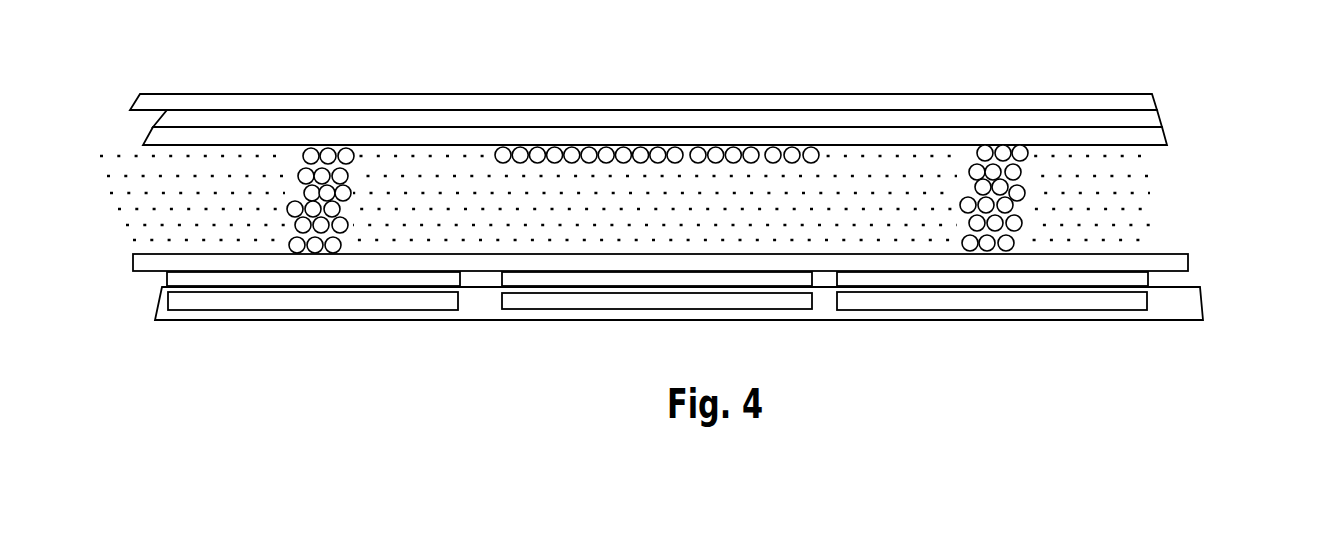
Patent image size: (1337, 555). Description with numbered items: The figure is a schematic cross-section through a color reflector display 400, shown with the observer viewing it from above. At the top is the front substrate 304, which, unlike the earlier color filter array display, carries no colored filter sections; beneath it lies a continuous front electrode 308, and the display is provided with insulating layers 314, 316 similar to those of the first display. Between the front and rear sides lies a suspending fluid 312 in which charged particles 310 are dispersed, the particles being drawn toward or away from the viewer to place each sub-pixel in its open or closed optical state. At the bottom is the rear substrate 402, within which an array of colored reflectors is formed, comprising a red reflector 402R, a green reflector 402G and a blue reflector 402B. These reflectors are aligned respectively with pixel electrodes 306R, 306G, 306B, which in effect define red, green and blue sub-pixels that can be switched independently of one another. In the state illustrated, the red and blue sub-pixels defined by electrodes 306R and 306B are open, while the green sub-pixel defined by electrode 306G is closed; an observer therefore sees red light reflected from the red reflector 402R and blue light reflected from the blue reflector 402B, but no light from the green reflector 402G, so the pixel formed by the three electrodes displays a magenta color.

The color reflector display 400 is at (1186, 204).
The front substrate 304 is at (837, 103).
The transparent electrode layer 308 is at (540, 118).
The insulating layer 316 is at (162, 140).
The suspending fluid 312 is at (410, 155).
The charged particles 310 is at (1017, 178).
The insulating layer 314 is at (153, 263).
The red pixel electrode 306R is at (313, 278).
The green pixel electrode 306G is at (657, 279).
The blue pixel electrode 306B is at (992, 278).
The rear substrate 402 is at (725, 318).
The red reflector 402R is at (313, 300).
The green reflector 402G is at (655, 301).
The blue reflector 402B is at (993, 302).